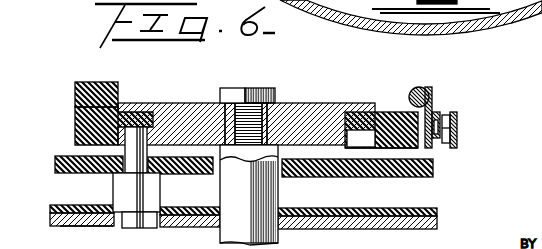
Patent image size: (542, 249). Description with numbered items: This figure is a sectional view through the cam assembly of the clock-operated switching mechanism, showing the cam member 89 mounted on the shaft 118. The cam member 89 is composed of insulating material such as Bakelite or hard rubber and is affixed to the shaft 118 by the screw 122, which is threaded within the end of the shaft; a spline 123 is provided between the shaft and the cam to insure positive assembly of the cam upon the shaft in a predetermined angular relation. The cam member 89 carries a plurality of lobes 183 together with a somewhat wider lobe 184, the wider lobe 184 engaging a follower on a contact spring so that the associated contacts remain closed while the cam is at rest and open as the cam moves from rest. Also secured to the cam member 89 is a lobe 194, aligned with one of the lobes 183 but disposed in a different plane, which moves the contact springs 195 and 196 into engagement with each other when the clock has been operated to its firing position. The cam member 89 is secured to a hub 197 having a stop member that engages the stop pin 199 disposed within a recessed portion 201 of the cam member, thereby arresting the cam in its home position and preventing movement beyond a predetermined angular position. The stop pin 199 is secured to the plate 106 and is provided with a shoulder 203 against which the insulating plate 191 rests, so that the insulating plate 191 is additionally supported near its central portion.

The lobe 194 is at (75, 98).
The lobes 183 is at (77, 137).
The hub 197 is at (320, 107).
The cam member 89 is at (388, 111).
The wider lobe 184 is at (405, 107).
The contact spring 195 is at (440, 117).
The contact spring 196 is at (457, 127).
The recessed portion 201 is at (370, 149).
The spline 123 is at (213, 118).
The screw 122 is at (233, 92).
The shaft 118 is at (240, 223).
The shoulder 203 is at (113, 180).
The stop pin 199 is at (110, 226).
The insulating plate 191 is at (435, 168).
The plate 106 is at (338, 229).